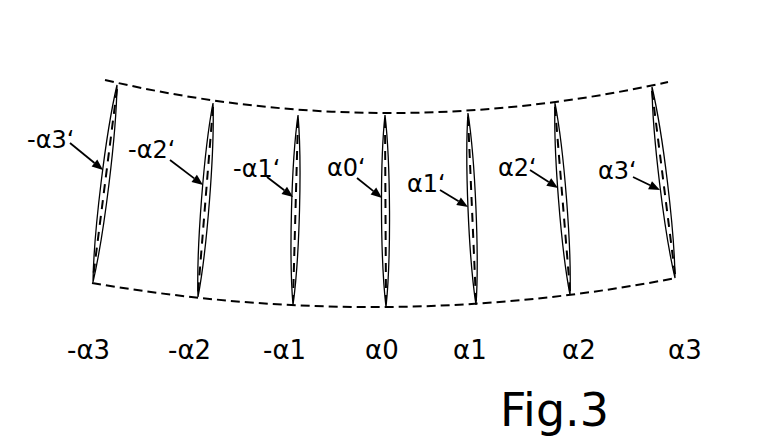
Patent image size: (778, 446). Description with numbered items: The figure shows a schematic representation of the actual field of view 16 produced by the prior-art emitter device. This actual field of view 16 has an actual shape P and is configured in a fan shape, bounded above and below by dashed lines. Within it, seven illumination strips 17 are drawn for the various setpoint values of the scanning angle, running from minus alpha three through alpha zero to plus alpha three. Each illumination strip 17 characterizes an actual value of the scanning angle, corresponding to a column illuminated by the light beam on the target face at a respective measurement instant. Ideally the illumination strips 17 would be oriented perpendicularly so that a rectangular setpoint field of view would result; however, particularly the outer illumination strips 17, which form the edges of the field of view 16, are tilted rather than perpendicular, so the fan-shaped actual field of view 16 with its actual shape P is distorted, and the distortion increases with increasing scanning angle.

The actual field of view 16 is at (608, 92).
The illumination strip 17 is at (663, 163).
The actual shape P is at (433, 144).